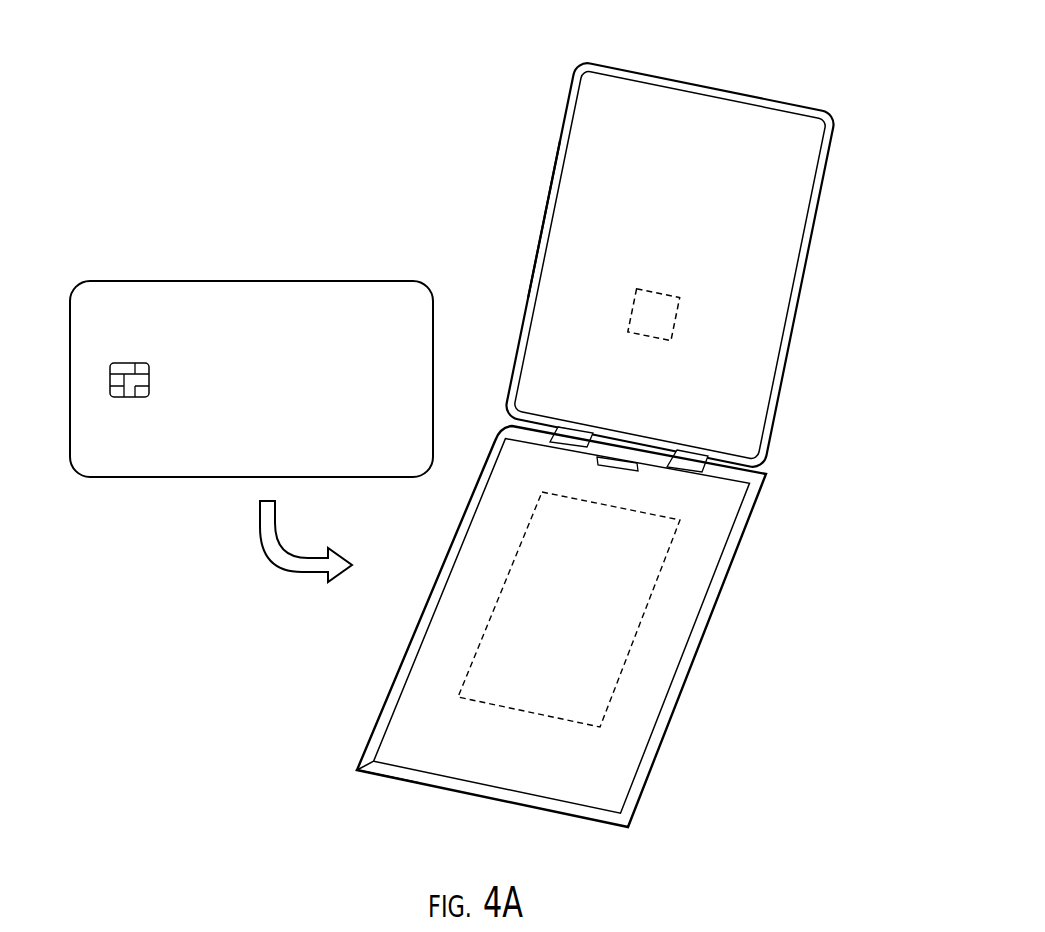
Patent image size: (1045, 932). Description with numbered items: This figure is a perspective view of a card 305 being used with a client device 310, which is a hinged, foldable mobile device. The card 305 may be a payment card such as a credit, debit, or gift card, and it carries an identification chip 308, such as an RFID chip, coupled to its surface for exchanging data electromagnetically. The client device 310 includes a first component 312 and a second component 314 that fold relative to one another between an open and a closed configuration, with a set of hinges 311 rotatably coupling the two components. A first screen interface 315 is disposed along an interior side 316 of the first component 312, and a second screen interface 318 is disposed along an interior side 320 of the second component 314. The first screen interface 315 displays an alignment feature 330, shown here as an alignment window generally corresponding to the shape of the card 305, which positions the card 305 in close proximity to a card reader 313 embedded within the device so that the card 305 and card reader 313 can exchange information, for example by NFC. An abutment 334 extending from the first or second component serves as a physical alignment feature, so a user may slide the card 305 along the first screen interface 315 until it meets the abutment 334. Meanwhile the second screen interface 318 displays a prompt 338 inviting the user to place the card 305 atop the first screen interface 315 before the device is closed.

The card 305 is at (251, 345).
The identification chip 308 is at (128, 365).
The client device 310 is at (618, 416).
The hinges 311 is at (573, 428).
The first component 312 is at (560, 626).
The card reader 313 is at (632, 310).
The second component 314 is at (659, 262).
The first screen interface 315 is at (402, 730).
The interior side 316 is at (435, 596).
The second screen interface 318 is at (763, 370).
The interior side 320 is at (553, 158).
The alignment feature 330 is at (612, 695).
The abutment 334 is at (607, 460).
The prompt 338 is at (786, 162).